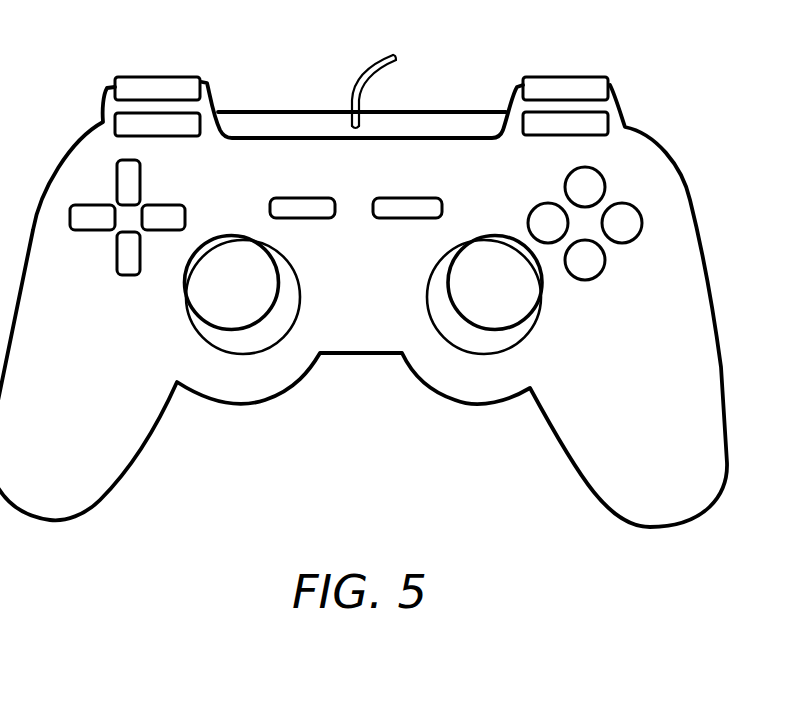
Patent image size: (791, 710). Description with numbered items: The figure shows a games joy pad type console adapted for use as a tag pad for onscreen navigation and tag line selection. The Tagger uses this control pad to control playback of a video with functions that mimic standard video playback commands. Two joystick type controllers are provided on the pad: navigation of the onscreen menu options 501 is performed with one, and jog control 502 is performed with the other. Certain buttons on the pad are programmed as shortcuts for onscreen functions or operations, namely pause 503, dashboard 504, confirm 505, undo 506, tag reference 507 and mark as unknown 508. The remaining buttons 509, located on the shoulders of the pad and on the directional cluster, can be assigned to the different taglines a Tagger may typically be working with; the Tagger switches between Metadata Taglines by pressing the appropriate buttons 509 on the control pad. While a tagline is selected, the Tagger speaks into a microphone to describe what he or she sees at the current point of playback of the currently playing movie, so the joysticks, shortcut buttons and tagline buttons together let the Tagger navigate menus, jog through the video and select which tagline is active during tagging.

The onscreen menu options navigation 501 is at (186, 291).
The jog control 502 is at (542, 291).
The pause 503 is at (300, 197).
The dashboard 504 is at (408, 197).
The confirm 505 is at (598, 279).
The undo 506 is at (529, 223).
The tag reference 507 is at (628, 240).
The mark as unknown 508 is at (566, 192).
The remaining buttons 509 is at (115, 77).